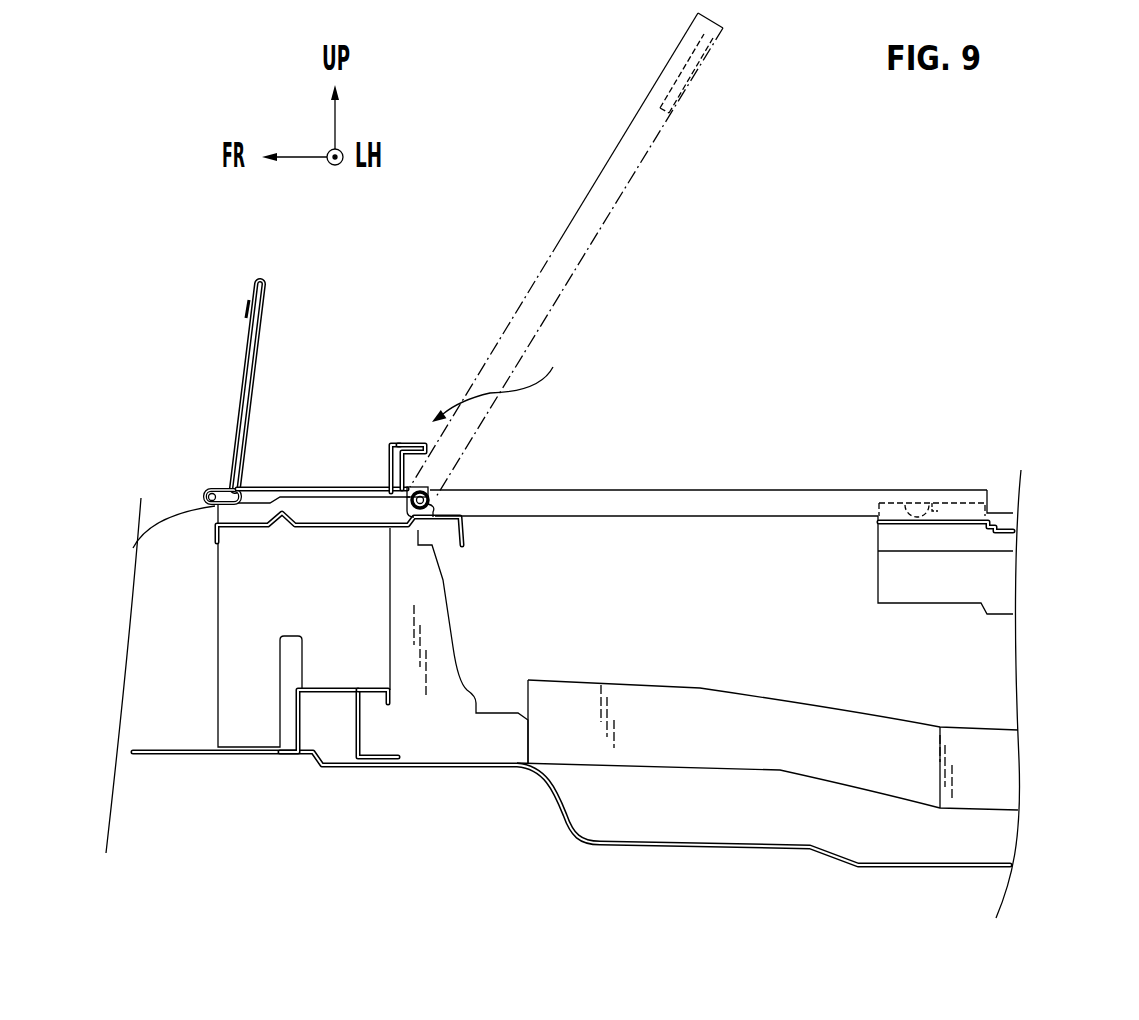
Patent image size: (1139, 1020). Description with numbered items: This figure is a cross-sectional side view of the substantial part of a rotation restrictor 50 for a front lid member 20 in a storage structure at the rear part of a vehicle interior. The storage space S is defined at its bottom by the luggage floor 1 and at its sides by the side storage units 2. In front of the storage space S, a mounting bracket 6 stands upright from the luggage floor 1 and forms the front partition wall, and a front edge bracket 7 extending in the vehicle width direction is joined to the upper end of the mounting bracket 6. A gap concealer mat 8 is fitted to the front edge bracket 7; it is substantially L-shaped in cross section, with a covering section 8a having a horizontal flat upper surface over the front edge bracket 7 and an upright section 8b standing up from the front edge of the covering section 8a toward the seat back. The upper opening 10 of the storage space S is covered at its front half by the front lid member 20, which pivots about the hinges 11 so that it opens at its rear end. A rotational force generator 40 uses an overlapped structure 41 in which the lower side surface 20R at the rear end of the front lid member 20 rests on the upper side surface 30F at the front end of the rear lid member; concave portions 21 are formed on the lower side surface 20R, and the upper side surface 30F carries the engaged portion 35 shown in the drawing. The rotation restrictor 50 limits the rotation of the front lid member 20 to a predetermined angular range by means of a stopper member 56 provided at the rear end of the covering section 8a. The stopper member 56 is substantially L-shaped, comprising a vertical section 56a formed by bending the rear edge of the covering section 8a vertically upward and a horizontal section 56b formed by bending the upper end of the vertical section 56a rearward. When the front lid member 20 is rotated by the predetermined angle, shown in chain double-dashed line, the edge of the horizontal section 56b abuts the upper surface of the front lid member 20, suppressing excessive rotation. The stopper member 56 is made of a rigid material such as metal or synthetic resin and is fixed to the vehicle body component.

The luggage floor 1 is at (674, 843).
The side storage unit 2 is at (990, 665).
The mounting bracket 6 is at (452, 626).
The front edge bracket 7 is at (253, 524).
The gap concealer mat 8 is at (306, 393).
The covering section 8a is at (330, 484).
The upright section 8b is at (247, 443).
The upper opening 10 is at (759, 522).
The hinge 11 is at (435, 497).
The front lid member 20 is at (541, 244).
The lower side surface 20R is at (933, 402).
The concave portion 21 is at (907, 512).
The upper side surface 30F is at (1042, 395).
The front end portion 35 is at (962, 503).
The rotational force generator 40 is at (881, 476).
The overlapped structure 41 is at (1005, 376).
The rotation restrictor 50 is at (501, 379).
The stopper member 56 is at (417, 368).
The vertical section 56a is at (380, 485).
The horizontal section 56b is at (415, 441).
The storage space S is at (798, 627).